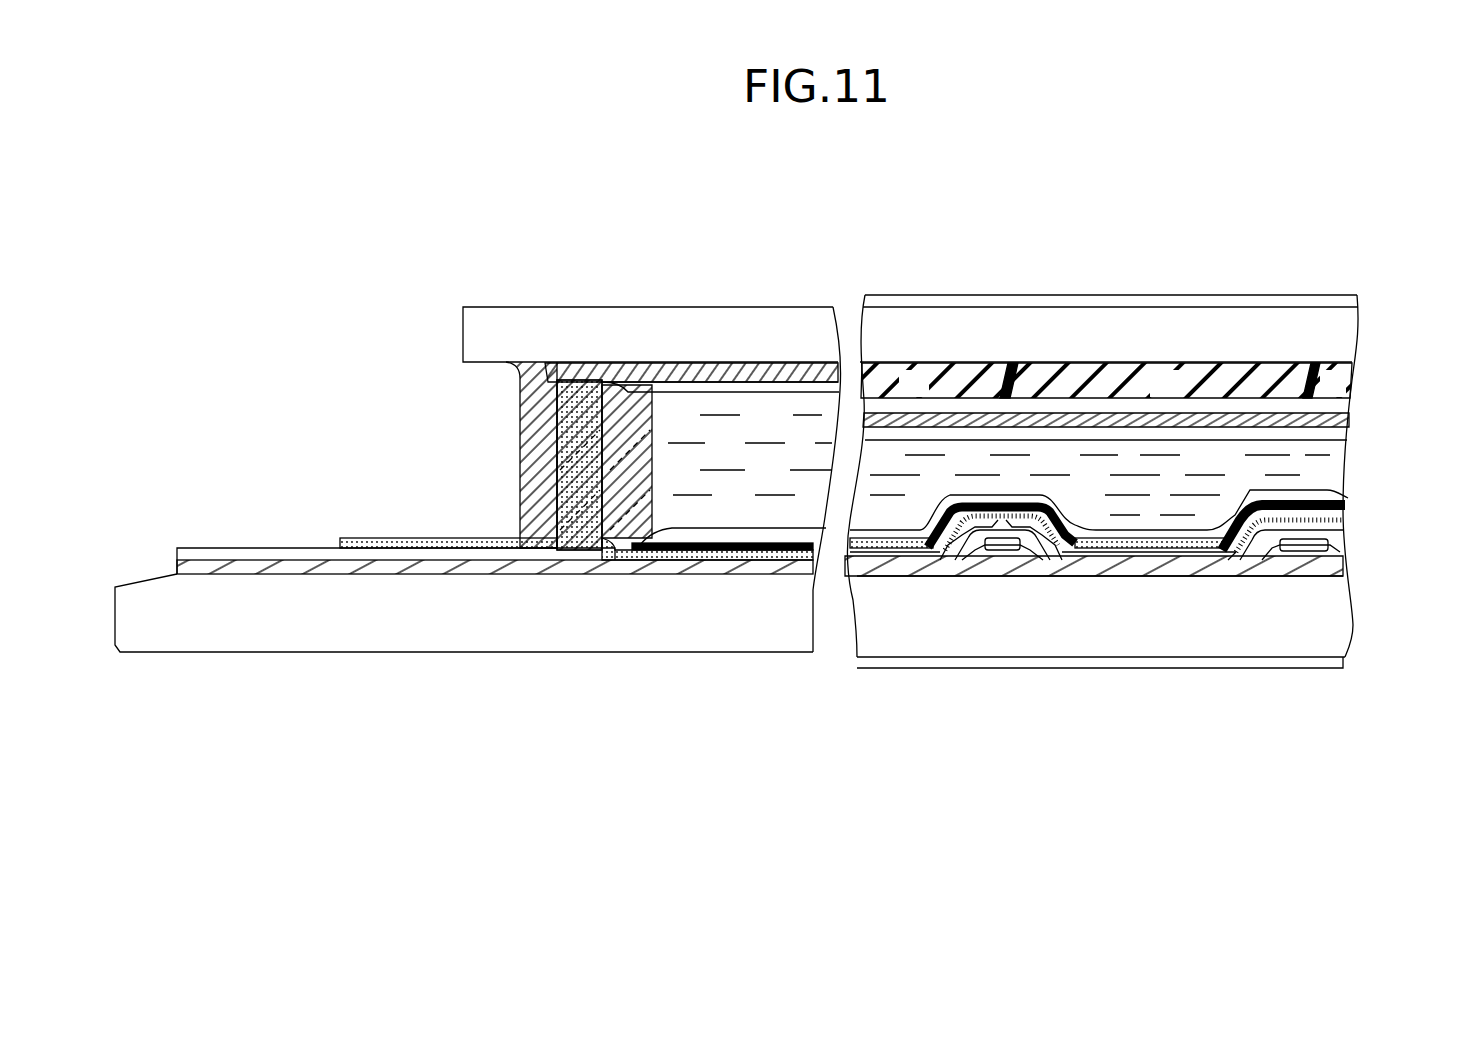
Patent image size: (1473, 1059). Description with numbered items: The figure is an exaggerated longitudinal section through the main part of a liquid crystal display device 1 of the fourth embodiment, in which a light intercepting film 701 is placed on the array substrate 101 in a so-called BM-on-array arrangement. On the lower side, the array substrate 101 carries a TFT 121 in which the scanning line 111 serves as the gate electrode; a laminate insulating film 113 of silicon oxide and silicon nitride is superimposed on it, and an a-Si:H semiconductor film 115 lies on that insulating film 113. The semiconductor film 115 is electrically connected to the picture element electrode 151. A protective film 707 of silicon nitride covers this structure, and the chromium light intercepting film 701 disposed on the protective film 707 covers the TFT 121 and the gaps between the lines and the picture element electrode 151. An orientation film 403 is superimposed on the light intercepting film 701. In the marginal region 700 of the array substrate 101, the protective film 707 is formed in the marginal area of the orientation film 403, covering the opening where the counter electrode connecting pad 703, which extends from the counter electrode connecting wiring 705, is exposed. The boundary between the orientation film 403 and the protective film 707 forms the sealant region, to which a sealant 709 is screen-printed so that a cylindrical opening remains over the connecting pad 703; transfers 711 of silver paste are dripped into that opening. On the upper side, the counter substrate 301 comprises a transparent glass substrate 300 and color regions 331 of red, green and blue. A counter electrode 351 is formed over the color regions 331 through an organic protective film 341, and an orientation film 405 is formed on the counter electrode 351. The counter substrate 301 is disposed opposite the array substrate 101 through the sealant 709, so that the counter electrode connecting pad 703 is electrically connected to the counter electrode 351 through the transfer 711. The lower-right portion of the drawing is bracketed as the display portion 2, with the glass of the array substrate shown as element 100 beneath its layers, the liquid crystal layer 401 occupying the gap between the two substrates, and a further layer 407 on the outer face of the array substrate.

The liquid crystal display device 1 is at (1413, 196).
The pixel portion / TFT array substrate 2 is at (1345, 783).
The lower glass substrate 100 is at (1280, 648).
The array substrate 101 is at (1370, 651).
The scanning line 111 is at (1000, 565).
The laminate insulating film 113 is at (1043, 565).
The semiconductor film 115 is at (955, 560).
The TFT 121 is at (1080, 730).
The picture element electrode 151 is at (930, 560).
The transparent glass substrate 300 is at (1339, 327).
The counter substrate 301 is at (1469, 351).
The color regions 331 is at (1346, 390).
The organic protective film 341 is at (1335, 412).
The counter electrode 351 is at (780, 373).
The liquid crystal layer 401 is at (1326, 473).
The orientation film 403 is at (1341, 505).
The orientation film 405 is at (1346, 440).
The polarizing plate 407 is at (1330, 673).
The marginal region 700 is at (813, 724).
The light intercepting film 701 is at (738, 547).
The counter electrode connecting pad 703 is at (568, 565).
The counter electrode connecting wiring 705 is at (300, 556).
The protective film 707 is at (442, 540).
The sealant 709 is at (540, 405).
The transfers 711 is at (575, 445).